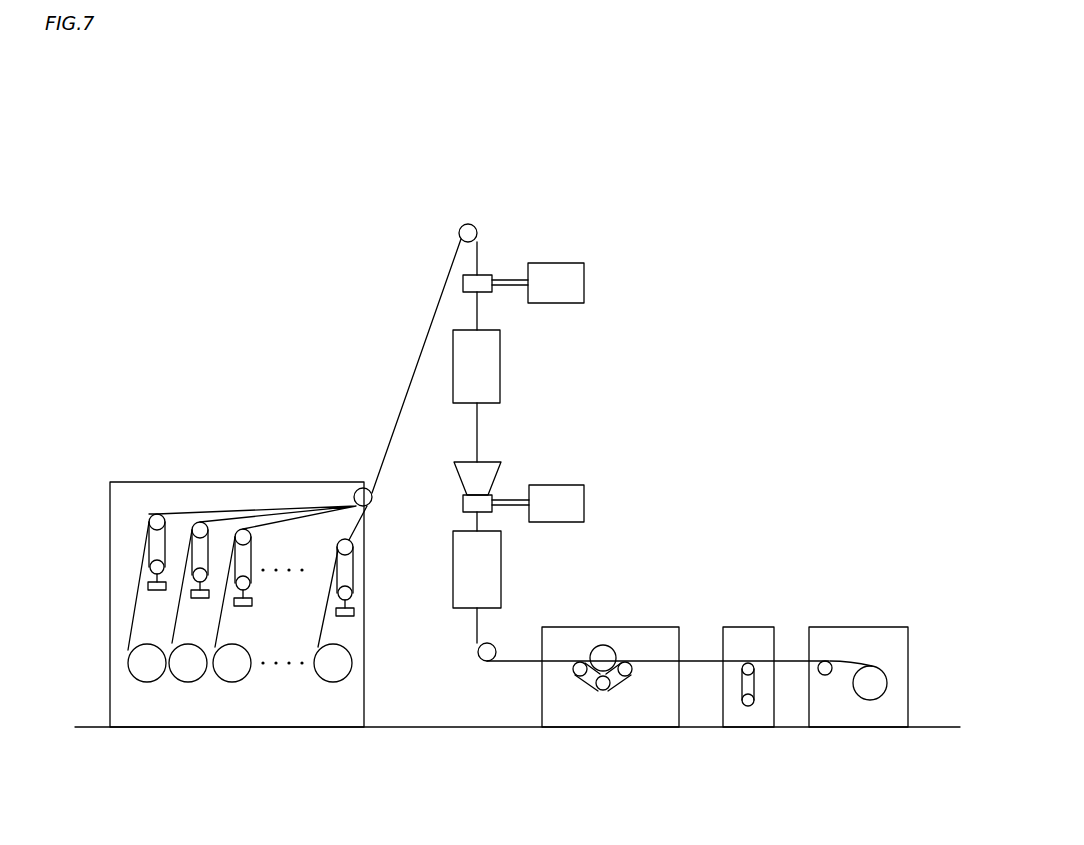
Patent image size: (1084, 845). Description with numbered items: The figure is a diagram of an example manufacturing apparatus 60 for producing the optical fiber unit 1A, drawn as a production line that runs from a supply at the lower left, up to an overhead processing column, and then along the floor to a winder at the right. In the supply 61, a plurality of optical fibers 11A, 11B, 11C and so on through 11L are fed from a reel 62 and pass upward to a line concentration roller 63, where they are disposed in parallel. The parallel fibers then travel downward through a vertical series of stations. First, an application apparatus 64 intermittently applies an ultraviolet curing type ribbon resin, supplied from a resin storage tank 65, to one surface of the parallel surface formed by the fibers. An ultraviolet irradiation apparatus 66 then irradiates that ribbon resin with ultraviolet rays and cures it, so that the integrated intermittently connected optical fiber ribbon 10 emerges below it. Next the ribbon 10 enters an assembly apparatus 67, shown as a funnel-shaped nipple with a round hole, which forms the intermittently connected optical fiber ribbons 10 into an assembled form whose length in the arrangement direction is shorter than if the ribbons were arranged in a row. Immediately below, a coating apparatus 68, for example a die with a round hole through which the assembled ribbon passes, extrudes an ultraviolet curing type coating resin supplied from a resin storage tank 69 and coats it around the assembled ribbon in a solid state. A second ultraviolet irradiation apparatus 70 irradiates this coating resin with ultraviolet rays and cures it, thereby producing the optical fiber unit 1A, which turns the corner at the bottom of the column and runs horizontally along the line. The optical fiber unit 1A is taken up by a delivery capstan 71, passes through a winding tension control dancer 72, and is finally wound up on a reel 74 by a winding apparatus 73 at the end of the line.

The manufacturing apparatus 60 is at (647, 148).
The supply 61 is at (220, 482).
The reel 62 is at (184, 676).
The optical fiber 11A is at (136, 598).
The optical fiber 11B is at (175, 627).
The optical fiber 11C is at (219, 627).
The optical fiber 11L is at (325, 615).
The line concentration roller 63 is at (460, 226).
The application apparatus 64 is at (483, 281).
The resin storage tank 65 is at (565, 263).
The ultraviolet irradiation apparatus 66 is at (500, 347).
The intermittently connected optical fiber ribbon 10 is at (477, 430).
The assembly apparatus 67 is at (497, 478).
The coating apparatus 68 is at (462, 503).
The resin storage tank 69 is at (585, 495).
The ultraviolet irradiation apparatus 70 is at (501, 572).
The optical fiber unit 1A is at (477, 630).
The delivery capstan 71 is at (610, 627).
The winding tension control dancer 72 is at (746, 627).
The winding apparatus 73 is at (860, 627).
The reel 74 is at (884, 677).